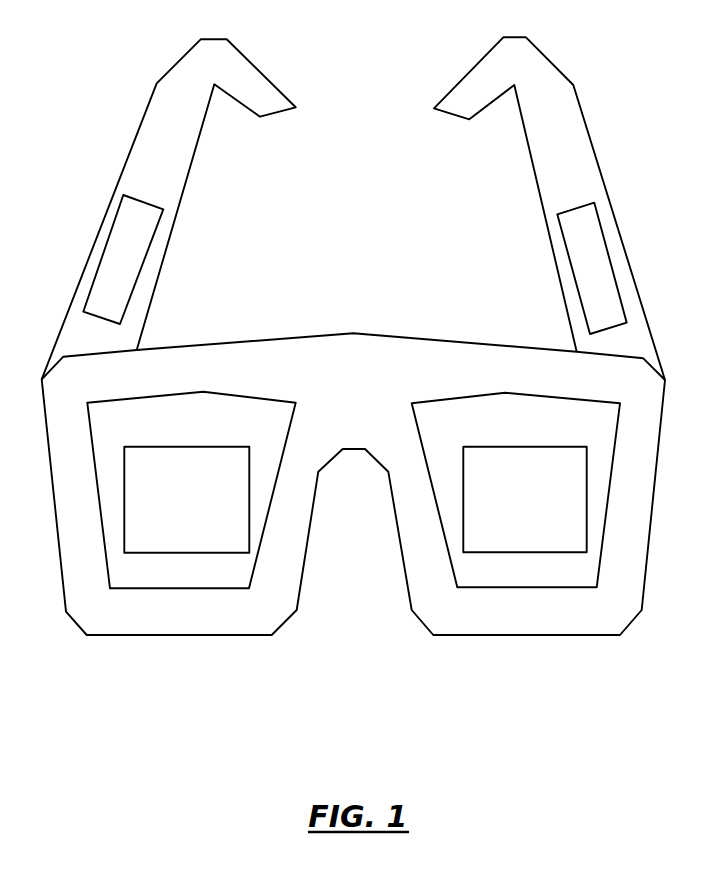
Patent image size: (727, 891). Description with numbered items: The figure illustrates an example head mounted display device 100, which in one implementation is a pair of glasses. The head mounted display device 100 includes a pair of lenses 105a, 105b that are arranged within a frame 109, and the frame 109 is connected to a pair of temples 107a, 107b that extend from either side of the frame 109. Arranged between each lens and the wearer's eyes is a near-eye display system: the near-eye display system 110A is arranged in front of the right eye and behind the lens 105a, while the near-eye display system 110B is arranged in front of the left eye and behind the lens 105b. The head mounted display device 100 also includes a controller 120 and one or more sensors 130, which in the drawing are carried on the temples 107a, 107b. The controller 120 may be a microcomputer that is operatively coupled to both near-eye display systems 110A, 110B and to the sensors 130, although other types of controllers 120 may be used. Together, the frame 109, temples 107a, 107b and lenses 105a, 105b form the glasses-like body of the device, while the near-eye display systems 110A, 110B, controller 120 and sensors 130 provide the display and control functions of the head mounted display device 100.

The head mounted display device 100 is at (353, 381).
The lens 105a is at (191, 490).
The lens 105b is at (516, 490).
The temple 107a is at (169, 209).
The temple 107b is at (549, 208).
The frame 109 is at (353, 484).
The near-eye display system 110A is at (186, 500).
The near-eye display system 110B is at (524, 500).
The controller 120 is at (123, 259).
The sensors 130 is at (591, 268).